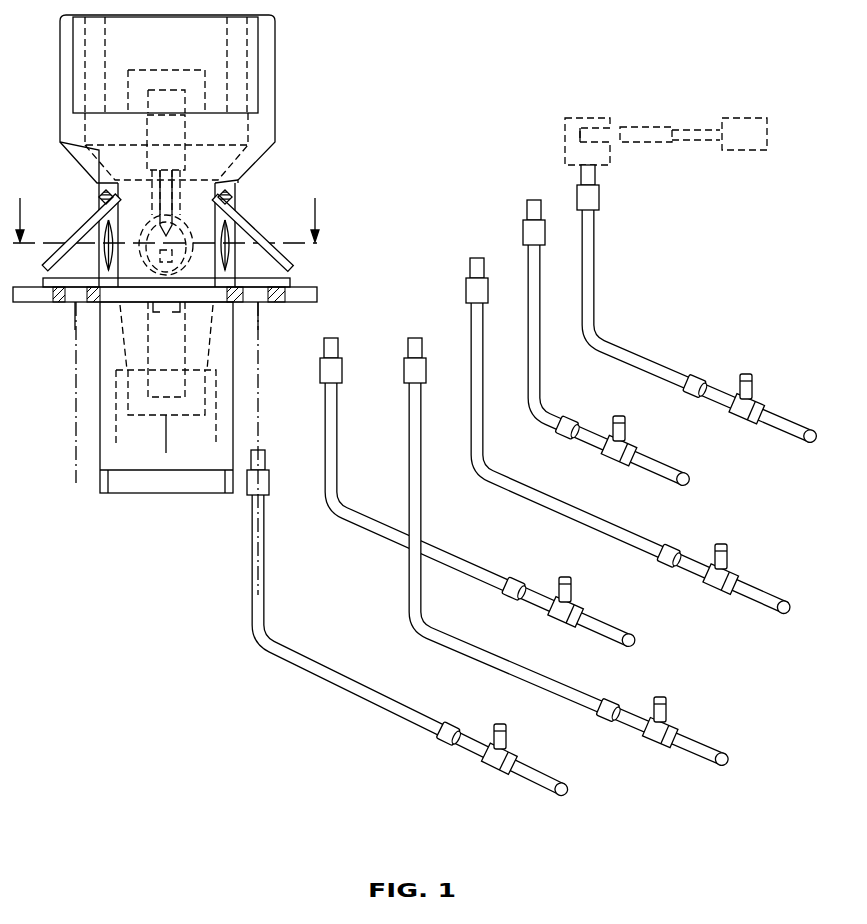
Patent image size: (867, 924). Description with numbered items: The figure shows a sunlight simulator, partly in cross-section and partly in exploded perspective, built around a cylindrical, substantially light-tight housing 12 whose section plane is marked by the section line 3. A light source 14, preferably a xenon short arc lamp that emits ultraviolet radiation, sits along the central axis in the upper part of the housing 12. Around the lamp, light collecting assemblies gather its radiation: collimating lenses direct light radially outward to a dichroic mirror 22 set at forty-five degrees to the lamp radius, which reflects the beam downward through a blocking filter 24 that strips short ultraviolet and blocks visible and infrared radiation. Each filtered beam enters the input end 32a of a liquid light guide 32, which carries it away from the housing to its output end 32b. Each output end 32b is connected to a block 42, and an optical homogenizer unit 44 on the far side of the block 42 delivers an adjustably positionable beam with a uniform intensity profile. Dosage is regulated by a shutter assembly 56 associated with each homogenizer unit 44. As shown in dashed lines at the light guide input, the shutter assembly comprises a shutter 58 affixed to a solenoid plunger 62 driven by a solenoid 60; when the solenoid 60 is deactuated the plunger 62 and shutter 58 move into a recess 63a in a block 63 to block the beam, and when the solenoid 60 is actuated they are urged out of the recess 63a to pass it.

The section line 3- 3 is at (166, 208).
The housing 12 is at (275, 78).
The light source 14 is at (182, 215).
The mirror 22 is at (250, 232).
The blocking filter 24 is at (60, 305).
The liquid light guide 32 is at (597, 310).
The input end of liquid light guide 32a is at (597, 250).
The output end of liquid light guide 32b is at (690, 375).
The block 42 is at (745, 420).
The optical homogenizer unit 44 is at (785, 438).
The shutter assembly 56 is at (768, 379).
The shutter 58 is at (650, 125).
The solenoid 60 is at (745, 116).
The solenoid plunger 62 is at (698, 128).
The block 63 is at (610, 152).
The recess 63a is at (580, 133).